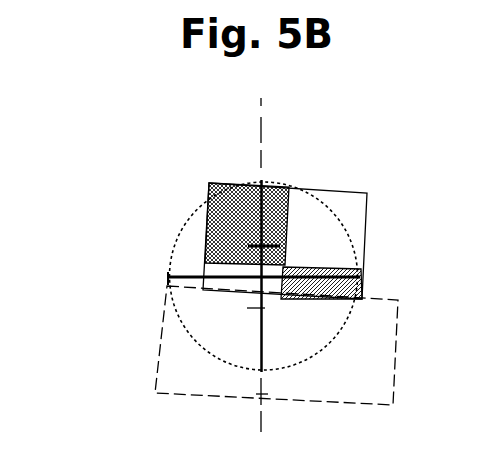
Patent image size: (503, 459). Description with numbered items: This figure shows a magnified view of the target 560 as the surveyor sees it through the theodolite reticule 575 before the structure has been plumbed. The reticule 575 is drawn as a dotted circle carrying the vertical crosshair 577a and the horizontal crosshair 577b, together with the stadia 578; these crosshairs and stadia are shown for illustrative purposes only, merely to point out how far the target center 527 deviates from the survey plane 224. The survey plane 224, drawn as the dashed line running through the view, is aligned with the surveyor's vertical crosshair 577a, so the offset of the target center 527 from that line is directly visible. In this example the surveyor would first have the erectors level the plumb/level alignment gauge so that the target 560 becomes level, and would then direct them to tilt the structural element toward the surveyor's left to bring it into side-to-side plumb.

The survey plane 224 is at (213, 265).
The target 560 is at (202, 206).
The theodolite reticule 575 is at (218, 276).
The vertical crosshair 577a is at (331, 227).
The horizontal crosshair 577b is at (192, 262).
The stadia 578 is at (321, 183).
The target center 527 is at (374, 240).